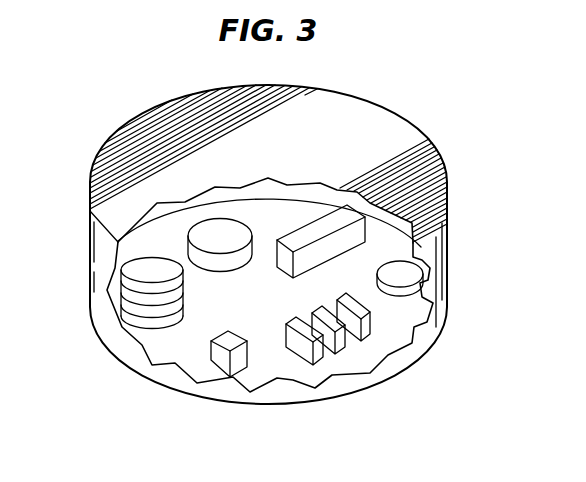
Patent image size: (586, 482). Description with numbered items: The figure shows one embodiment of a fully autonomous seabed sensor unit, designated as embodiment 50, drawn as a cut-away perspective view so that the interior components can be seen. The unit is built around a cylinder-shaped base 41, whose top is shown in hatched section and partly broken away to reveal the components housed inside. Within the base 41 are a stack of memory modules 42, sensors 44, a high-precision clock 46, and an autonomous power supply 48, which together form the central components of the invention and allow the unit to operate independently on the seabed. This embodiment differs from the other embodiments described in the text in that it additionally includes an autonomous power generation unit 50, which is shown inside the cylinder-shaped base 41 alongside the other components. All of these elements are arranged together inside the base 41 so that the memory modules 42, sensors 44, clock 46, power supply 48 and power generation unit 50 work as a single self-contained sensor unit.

The cylinder-shaped base 41 is at (148, 116).
The memory modules 42 is at (148, 330).
The sensors 44 is at (229, 262).
The high-precision clock 46 is at (220, 361).
The autonomous power supply 48 is at (362, 336).
The autonomous power generation unit 50 is at (408, 88).